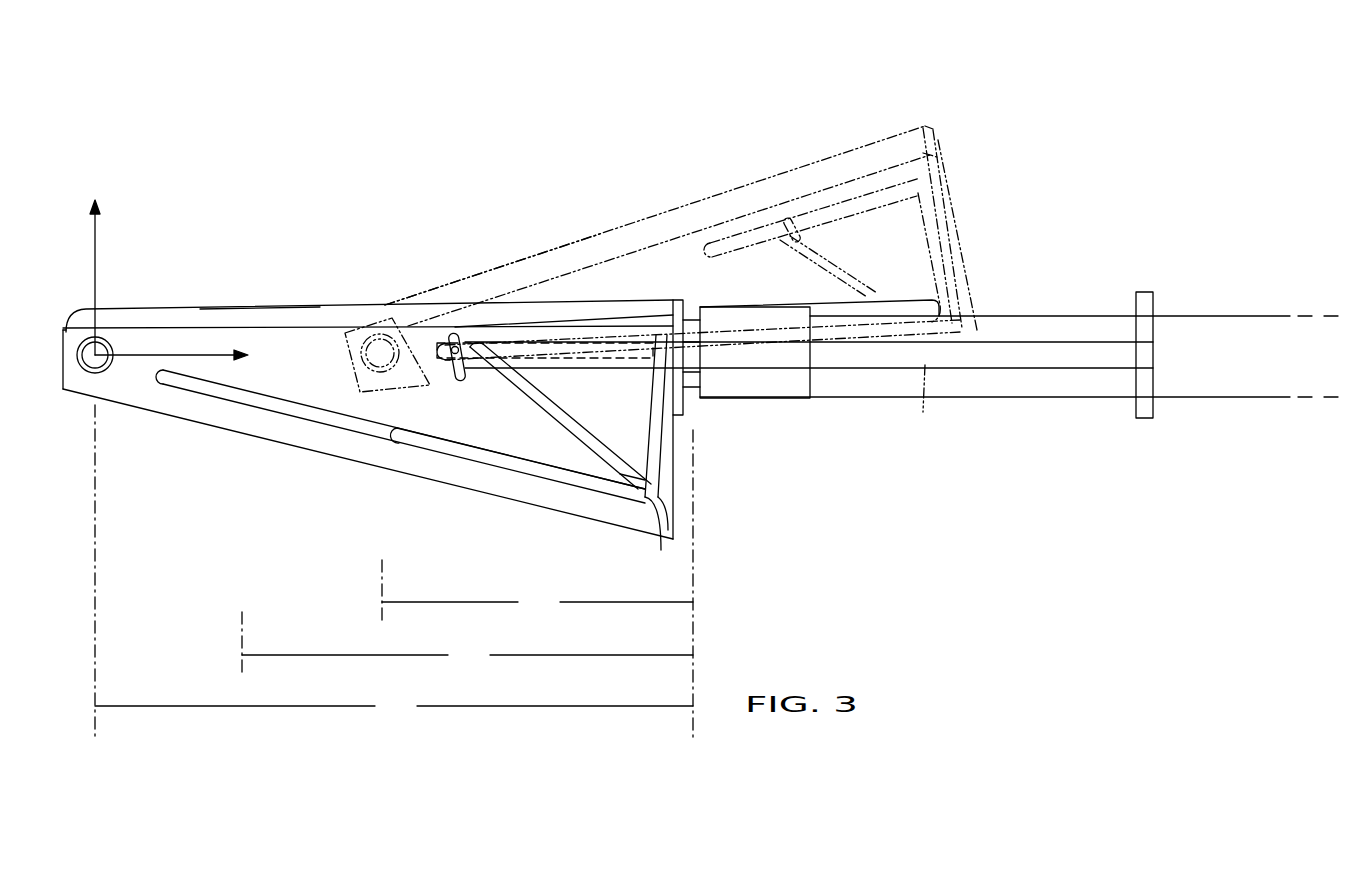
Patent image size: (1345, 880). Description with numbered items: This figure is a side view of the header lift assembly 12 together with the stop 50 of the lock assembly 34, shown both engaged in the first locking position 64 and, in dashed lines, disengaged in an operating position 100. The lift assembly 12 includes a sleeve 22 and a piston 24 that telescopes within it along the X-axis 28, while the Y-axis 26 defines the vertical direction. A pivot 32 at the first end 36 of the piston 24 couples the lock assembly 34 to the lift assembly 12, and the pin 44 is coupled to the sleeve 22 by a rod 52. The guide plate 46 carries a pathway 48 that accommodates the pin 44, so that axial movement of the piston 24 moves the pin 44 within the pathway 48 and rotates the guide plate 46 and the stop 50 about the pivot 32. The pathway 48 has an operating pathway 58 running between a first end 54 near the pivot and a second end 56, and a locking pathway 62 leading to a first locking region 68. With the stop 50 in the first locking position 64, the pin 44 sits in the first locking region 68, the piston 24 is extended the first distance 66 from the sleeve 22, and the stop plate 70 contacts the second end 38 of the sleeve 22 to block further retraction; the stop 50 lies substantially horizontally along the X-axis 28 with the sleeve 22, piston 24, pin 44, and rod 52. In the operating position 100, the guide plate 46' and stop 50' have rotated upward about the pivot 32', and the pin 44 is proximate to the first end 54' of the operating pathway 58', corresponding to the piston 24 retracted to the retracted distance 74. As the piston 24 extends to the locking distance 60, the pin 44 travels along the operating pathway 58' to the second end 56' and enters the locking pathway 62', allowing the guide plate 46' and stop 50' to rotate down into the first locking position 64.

The header lift assembly 12 is at (1148, 67).
The sleeve 22 is at (1210, 331).
The piston 24 is at (692, 380).
The Y-axis 26 is at (97, 283).
The X-axis 28 is at (167, 355).
The pivot 32 is at (75, 385).
The pivot 32' is at (344, 363).
The lock assembly 34 is at (286, 487).
The first end 36 is at (43, 334).
The second end 38 is at (752, 384).
The pin 44 is at (446, 334).
The guide plate 46 is at (697, 437).
The guide plate 46' is at (967, 230).
The pathway 48 is at (473, 448).
The stop 50 is at (368, 294).
The stop 50' is at (659, 220).
The rod 52 is at (1092, 358).
The first end 54 is at (386, 436).
The first end 54' is at (387, 371).
The second end 56 is at (659, 541).
The second end 56' is at (702, 382).
The operating pathway 58 is at (486, 465).
The operating pathway 58' is at (812, 298).
The locking distance 60 is at (394, 707).
The locking pathway 62 is at (617, 444).
The locking pathway 62' is at (822, 237).
The first locking position 64 is at (270, 297).
The first distance 66 is at (467, 642).
The first locking region 68 is at (510, 384).
The stop plate 70 is at (683, 404).
The retracted distance 74 is at (537, 591).
The operating position 100 is at (694, 192).